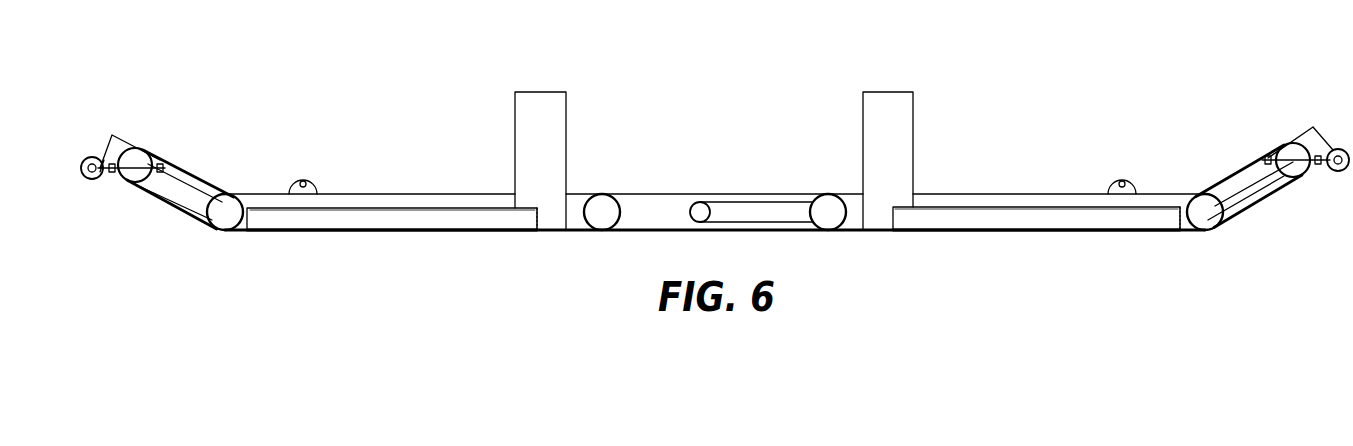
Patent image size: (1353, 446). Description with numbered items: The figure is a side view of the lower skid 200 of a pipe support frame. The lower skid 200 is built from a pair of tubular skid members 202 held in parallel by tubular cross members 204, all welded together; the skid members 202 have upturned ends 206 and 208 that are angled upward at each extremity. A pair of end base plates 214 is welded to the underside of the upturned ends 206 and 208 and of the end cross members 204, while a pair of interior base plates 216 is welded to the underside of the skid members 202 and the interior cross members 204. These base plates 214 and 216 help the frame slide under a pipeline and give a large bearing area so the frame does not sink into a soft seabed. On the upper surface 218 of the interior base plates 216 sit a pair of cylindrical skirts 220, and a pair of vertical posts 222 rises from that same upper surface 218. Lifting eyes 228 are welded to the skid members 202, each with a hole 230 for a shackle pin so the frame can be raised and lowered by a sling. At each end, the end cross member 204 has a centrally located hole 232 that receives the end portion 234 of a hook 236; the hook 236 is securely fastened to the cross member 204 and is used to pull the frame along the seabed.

The lower skid 200 is at (672, 192).
The tubular skid members 202 is at (807, 193).
The tubular cross members 204 is at (223, 197).
The upturned end 206 is at (112, 135).
The upturned end 208 is at (1307, 128).
The end base plates 214 is at (168, 208).
The interior base plates 216 is at (403, 233).
The upper surface 218 is at (373, 230).
The cylindrical skirts 220 is at (463, 210).
The vertical posts 222 is at (548, 92).
The lifting eyes 228 is at (308, 178).
The hole 230 is at (297, 180).
The hole 232 is at (110, 162).
The end portion 234 is at (160, 162).
The hook 236 is at (92, 178).